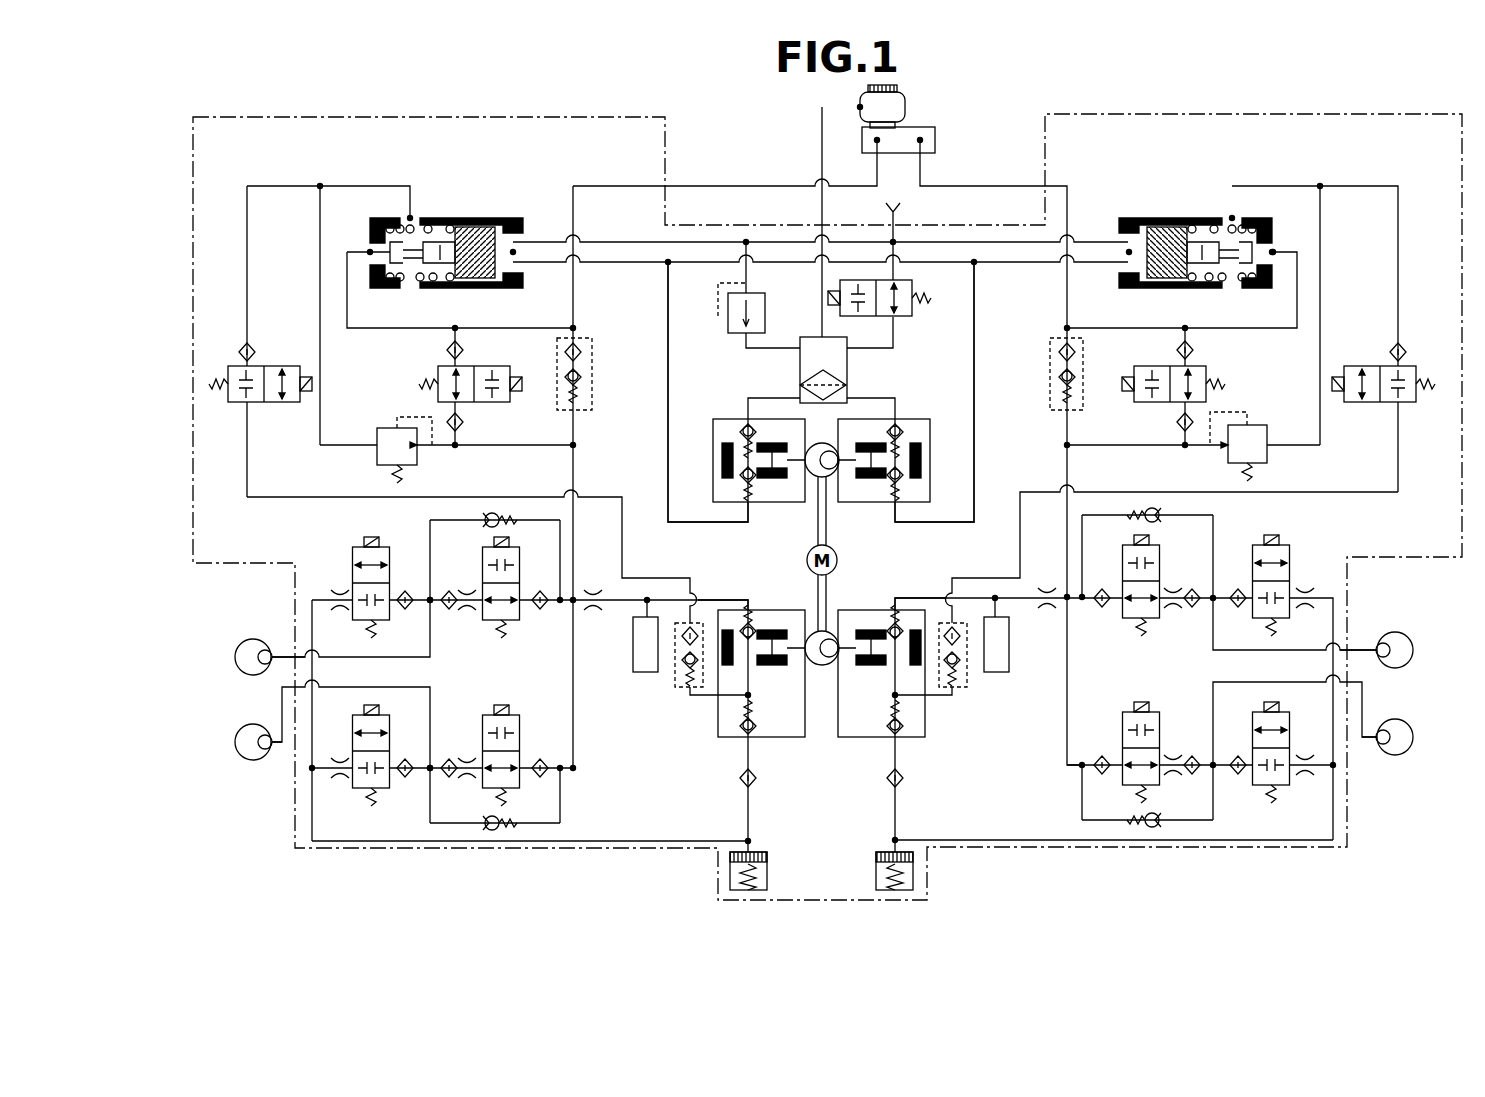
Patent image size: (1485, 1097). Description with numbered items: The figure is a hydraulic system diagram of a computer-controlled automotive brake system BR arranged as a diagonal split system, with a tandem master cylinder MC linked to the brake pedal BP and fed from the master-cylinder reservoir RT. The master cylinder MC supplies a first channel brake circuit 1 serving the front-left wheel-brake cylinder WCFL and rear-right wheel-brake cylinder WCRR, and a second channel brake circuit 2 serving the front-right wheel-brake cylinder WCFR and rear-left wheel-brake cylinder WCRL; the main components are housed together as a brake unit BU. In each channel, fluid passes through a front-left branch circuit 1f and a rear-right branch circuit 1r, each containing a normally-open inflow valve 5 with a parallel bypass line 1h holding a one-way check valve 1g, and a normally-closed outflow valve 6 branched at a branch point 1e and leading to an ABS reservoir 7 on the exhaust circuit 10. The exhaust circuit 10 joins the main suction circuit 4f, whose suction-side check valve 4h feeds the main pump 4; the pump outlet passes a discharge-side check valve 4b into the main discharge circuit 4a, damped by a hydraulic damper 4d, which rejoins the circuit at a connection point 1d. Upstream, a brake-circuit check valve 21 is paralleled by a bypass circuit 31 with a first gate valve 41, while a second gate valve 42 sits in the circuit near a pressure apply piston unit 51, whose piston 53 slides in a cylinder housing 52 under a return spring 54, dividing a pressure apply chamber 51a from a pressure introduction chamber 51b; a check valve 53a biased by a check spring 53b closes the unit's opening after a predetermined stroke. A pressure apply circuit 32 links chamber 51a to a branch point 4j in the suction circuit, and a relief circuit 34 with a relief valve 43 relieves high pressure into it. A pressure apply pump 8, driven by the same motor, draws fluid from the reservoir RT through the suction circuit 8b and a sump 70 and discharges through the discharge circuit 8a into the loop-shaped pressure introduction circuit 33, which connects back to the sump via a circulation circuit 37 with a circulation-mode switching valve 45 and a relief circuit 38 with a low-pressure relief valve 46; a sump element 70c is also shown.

The first channel brake circuit 1 is at (877, 172).
The second channel brake circuit 2 is at (737, 186).
The connection point 1d is at (571, 604).
The branch point 1e is at (428, 597).
The front-left wheel-brake cylinder branch circuit 1f is at (280, 650).
The one-way check valve 1g is at (494, 512).
The inflow-valve bypass line 1h is at (430, 520).
The rear-right wheel-brake cylinder branch circuit 1r is at (280, 750).
The main pump 4 is at (822, 674).
The main discharge circuit 4a is at (732, 598).
The discharge-side one-way check valve 4b is at (752, 625).
The hydraulic damper 4d is at (647, 672).
The main suction circuit 4f is at (750, 810).
The suction-side one-way check valve 4h is at (745, 735).
The branch point 4j is at (745, 697).
The inflow valve 5 is at (482, 562).
The outflow valve 6 is at (352, 565).
The ABS reservoir 7 is at (770, 880).
The brake-fluid pressure apply pump 8 is at (830, 482).
The pressure-apply discharge circuit 8a is at (668, 444).
The pressure-apply suction circuit 8b is at (822, 214).
The exhaust circuit 10 is at (662, 841).
The brake-circuit check valve 21 is at (592, 373).
The bypass circuit 31 is at (463, 426).
The brake-fluid pressure apply circuit 32 is at (247, 447).
The pressure introduction circuit 33 is at (606, 242).
The relief circuit 34 is at (320, 340).
The brake fluid circulation circuit 37 is at (895, 256).
The relief circuit 38 is at (746, 348).
The first gate valve 41 is at (438, 372).
The second gate valve 42 is at (234, 366).
The relief valve 43 is at (377, 462).
The circulation-mode switching valve 45 is at (918, 315).
The relief valve 46 is at (728, 330).
The brake-fluid pressure apply piston unit 51 is at (478, 213).
The pressure apply chamber 51a is at (410, 216).
The pressure introduction chamber 51b is at (565, 186).
The cylindrical piston housing 52 is at (374, 224).
The partitioning pressure-apply piston 53 is at (475, 278).
The check valve 53a is at (370, 254).
The check spring 53b is at (425, 268).
The return spring 54 is at (428, 225).
The sump 70 is at (808, 332).
The pressure sensor 70c is at (846, 383).
The brake system BR is at (781, 128).
The brake unit BU is at (1340, 112).
The master-cylinder reservoir RT is at (905, 112).
The tandem master cylinder MC is at (935, 132).
The brake pedal BP is at (963, 160).
The front-right wheel-brake cylinder WCFR is at (245, 673).
The rear-left wheel-brake cylinder WCRL is at (245, 758).
The front-left wheel-brake cylinder WCFL is at (1405, 634).
The rear-right wheel-brake cylinder WCRR is at (1405, 755).